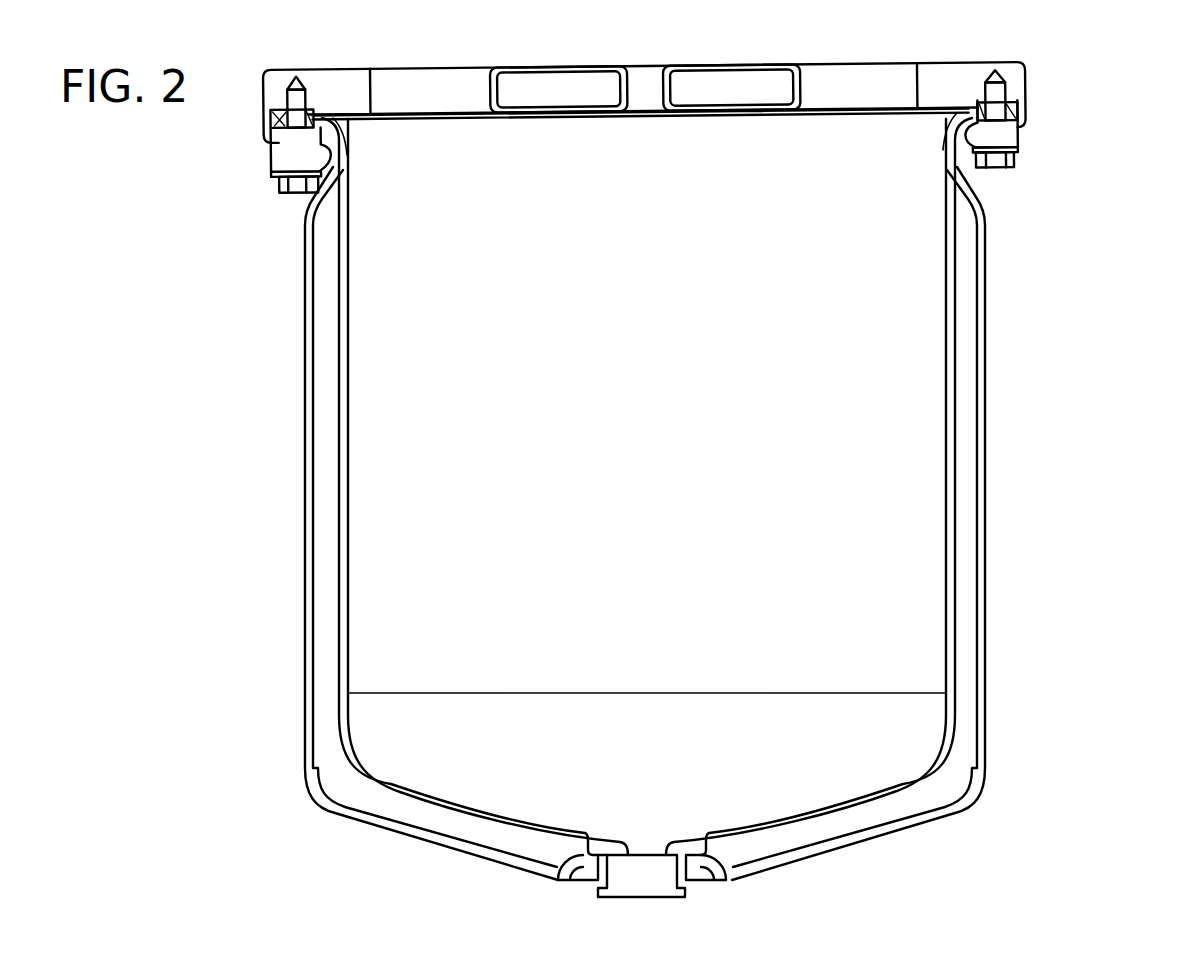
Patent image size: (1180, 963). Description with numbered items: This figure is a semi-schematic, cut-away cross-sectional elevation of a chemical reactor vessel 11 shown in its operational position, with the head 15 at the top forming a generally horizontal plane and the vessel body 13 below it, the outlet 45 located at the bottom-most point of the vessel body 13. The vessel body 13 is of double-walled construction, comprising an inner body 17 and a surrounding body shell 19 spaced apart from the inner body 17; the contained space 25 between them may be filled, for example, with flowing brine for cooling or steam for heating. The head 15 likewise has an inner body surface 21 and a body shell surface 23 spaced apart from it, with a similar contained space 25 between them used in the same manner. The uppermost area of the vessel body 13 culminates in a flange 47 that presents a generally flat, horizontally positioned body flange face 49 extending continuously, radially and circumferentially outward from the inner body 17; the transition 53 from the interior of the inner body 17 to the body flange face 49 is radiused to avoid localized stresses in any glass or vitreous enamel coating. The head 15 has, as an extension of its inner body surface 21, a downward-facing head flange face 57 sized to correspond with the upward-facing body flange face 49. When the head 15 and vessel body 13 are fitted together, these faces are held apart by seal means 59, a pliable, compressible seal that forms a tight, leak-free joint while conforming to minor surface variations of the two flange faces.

The chemical reactor vessel 11 is at (1098, 505).
The vessel body 13 is at (1025, 395).
The head 15 is at (1065, 88).
The inner body 17 is at (941, 351).
The body shell 19 is at (985, 258).
The inner body surface 21 is at (838, 113).
The body shell surface 23 is at (853, 66).
The contained space 25 is at (567, 78).
The outlet 45 is at (712, 889).
The flange 47 is at (270, 142).
The body flange face 49 is at (325, 107).
The transition 53 is at (369, 127).
The head flange face 57 is at (338, 120).
The seal means 59 is at (460, 122).